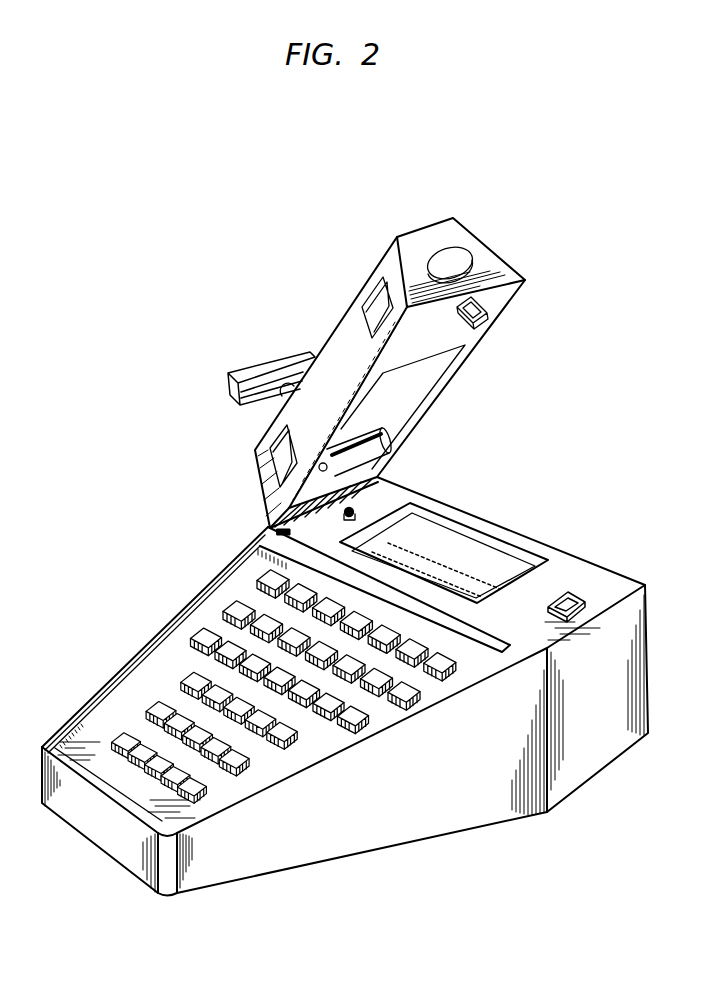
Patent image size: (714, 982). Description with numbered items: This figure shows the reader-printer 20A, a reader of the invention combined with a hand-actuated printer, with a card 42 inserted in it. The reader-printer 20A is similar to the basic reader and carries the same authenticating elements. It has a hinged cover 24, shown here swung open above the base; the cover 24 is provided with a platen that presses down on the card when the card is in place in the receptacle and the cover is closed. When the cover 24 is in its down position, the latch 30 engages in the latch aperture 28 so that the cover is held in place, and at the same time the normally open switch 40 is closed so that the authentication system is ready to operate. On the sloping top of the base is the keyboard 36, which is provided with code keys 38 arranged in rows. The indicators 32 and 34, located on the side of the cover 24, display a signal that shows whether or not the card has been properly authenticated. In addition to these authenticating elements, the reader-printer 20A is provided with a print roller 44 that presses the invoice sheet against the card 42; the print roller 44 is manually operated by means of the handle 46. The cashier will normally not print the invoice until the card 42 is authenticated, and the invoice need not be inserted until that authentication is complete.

The reader-printer 20A is at (576, 768).
The hinged cover 24 is at (463, 363).
The latch aperture 28 is at (578, 595).
The latch 30 is at (472, 308).
The indicator 32 is at (372, 300).
The indicator 34 is at (268, 462).
The keyboard 36 is at (307, 744).
The code keys 38 is at (112, 745).
The normally open switch 40 is at (357, 513).
The card 42 is at (495, 542).
The print roller 44 is at (386, 441).
The handle 46 is at (228, 373).